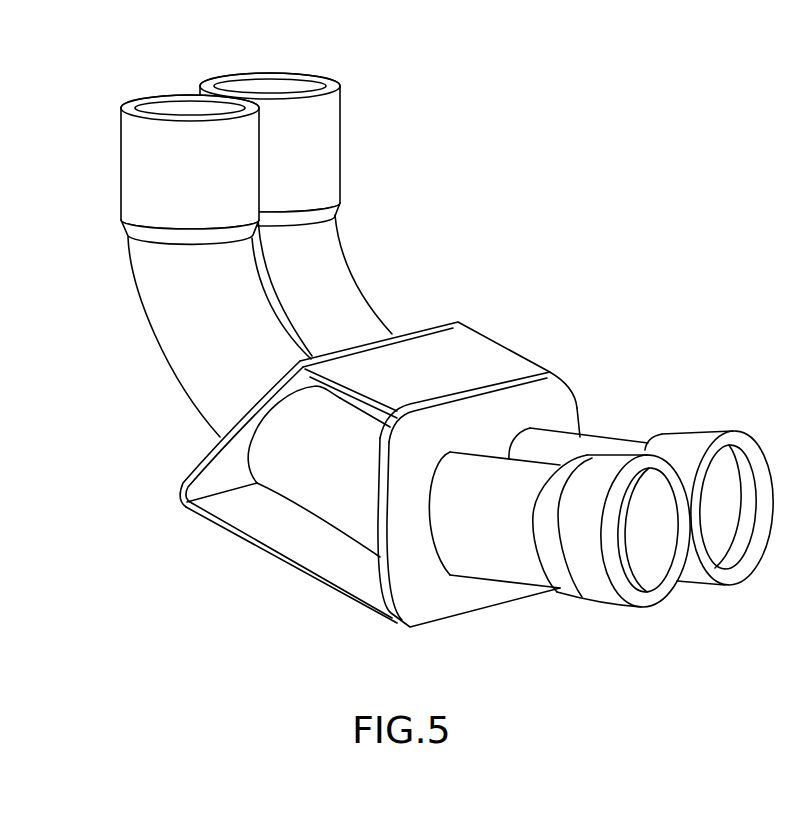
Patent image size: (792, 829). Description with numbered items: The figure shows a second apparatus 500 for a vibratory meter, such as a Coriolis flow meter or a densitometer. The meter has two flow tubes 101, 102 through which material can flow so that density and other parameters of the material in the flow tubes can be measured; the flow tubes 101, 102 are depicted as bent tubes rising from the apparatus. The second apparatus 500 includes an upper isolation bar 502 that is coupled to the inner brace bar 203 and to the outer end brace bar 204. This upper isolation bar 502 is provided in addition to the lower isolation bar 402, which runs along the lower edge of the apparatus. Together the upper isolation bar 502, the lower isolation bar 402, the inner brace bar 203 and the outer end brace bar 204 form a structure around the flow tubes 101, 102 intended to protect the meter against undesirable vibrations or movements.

The second apparatus 500 is at (673, 212).
The flow tube 101 is at (147, 312).
The flow tube 102 is at (353, 277).
The upper isolation bar 502 is at (517, 353).
The inner brace bar 203 is at (188, 478).
The lower isolation bar 402 is at (267, 557).
The outer end brace bar 204 is at (575, 397).